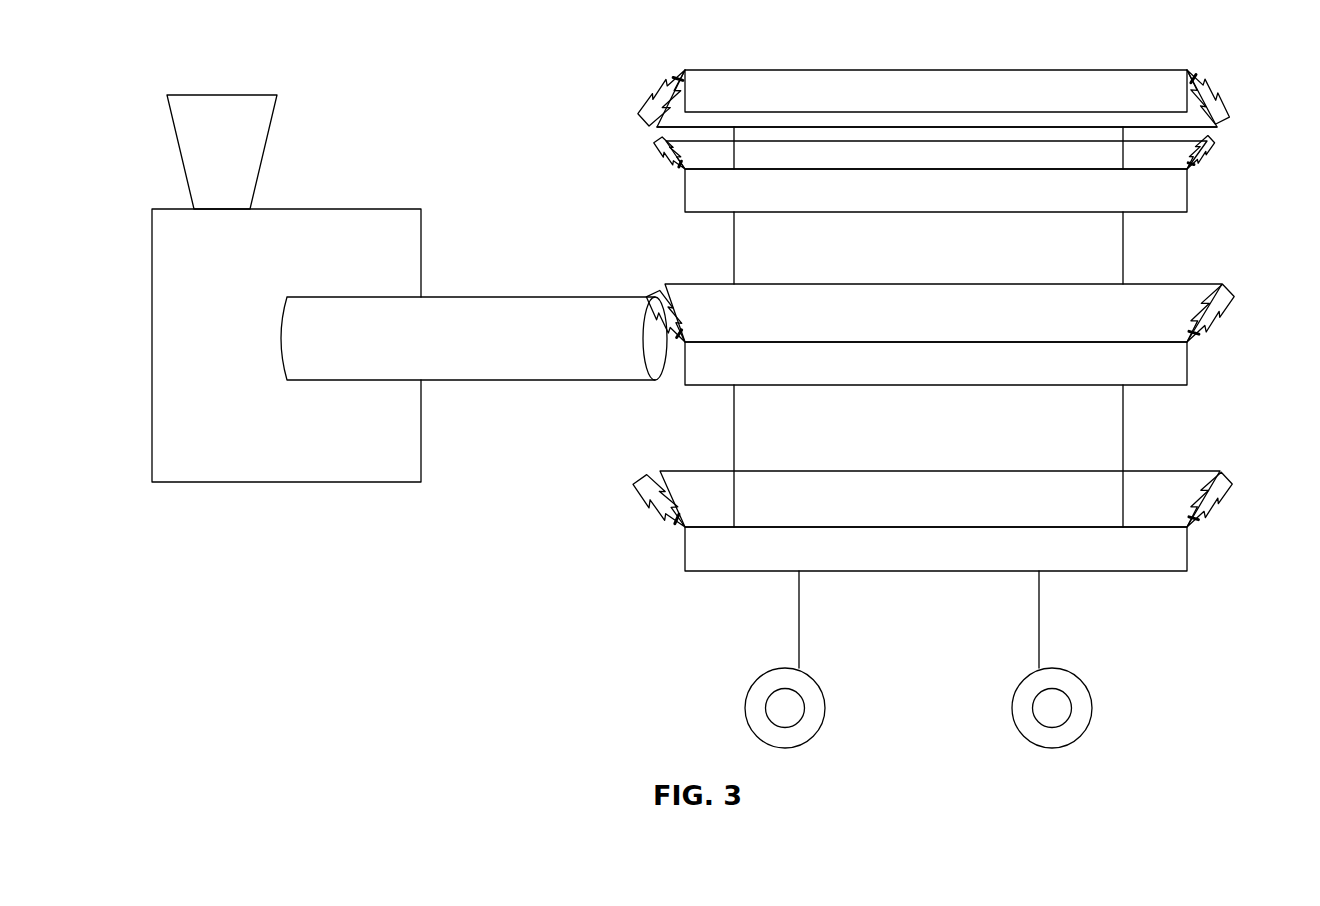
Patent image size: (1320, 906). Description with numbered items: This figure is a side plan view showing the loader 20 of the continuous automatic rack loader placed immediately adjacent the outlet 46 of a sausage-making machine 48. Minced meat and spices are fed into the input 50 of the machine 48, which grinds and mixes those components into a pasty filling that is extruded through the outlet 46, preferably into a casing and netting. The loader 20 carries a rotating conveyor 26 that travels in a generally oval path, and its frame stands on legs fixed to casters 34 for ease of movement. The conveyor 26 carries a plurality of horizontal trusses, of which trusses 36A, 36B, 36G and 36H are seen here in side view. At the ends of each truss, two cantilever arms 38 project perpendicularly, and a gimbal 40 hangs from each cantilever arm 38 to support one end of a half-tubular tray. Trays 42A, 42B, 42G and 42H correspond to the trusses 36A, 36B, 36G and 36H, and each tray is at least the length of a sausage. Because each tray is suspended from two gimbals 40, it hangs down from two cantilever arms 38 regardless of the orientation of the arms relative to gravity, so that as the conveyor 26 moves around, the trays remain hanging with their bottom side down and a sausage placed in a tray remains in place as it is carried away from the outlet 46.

The loader 20 is at (718, 55).
The conveyor 26 is at (732, 244).
The casters 34 is at (810, 718).
The truss 36A is at (920, 283).
The truss 36B is at (810, 470).
The truss 36G is at (952, 127).
The truss 36H is at (827, 140).
The cantilever arms 38 is at (642, 117).
The gimbal 40 is at (667, 82).
The tray 42A is at (1163, 382).
The tray 42B is at (1163, 565).
The tray 42G is at (1130, 82).
The tray 42H is at (1163, 205).
The outlet 46 is at (530, 310).
The sausage-making machine 48 is at (351, 220).
The input 50 is at (228, 102).